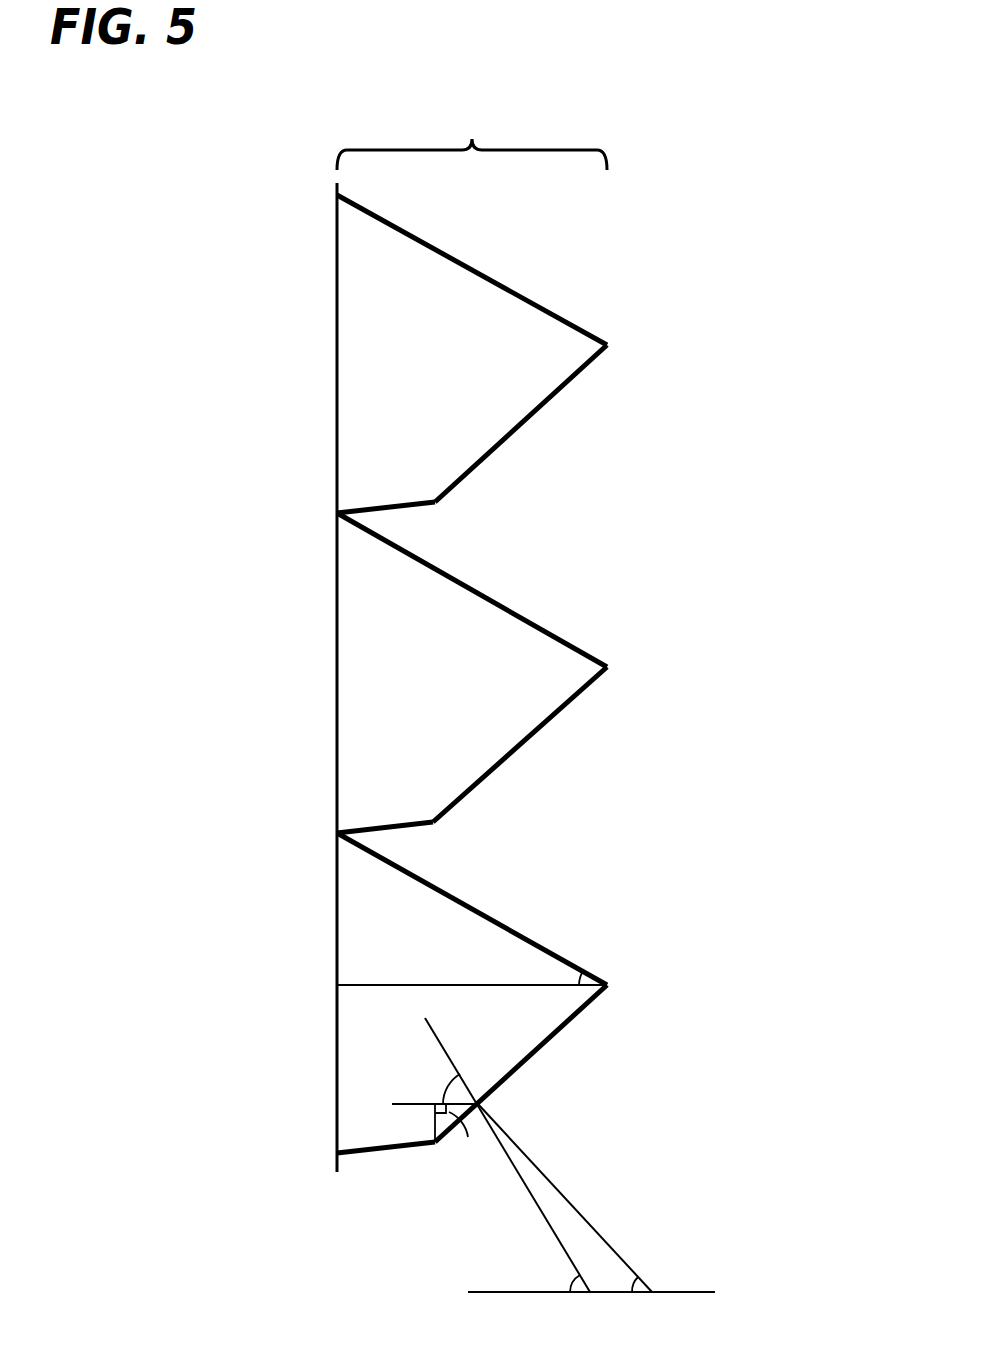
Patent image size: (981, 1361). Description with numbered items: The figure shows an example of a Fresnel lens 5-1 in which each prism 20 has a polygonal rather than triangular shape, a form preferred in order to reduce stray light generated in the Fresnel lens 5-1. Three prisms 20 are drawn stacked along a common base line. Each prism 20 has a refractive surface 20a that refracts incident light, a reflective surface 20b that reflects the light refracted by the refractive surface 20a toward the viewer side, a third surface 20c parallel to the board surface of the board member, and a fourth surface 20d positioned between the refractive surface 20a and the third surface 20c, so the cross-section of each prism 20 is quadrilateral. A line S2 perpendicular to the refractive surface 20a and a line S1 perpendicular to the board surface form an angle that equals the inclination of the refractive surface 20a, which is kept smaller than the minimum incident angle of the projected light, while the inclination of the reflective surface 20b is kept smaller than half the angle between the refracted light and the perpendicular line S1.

The Fresnel lens 5-1 is at (472, 138).
The prism 20 is at (493, 718).
The refractive surface 20a is at (541, 407).
The reflective surface 20b is at (555, 316).
The third surface 20c is at (337, 327).
The fourth surface 20d is at (400, 506).
The line perpendicular to the board surface S1 is at (500, 987).
The line perpendicular to the refractive surface S2 is at (601, 1236).